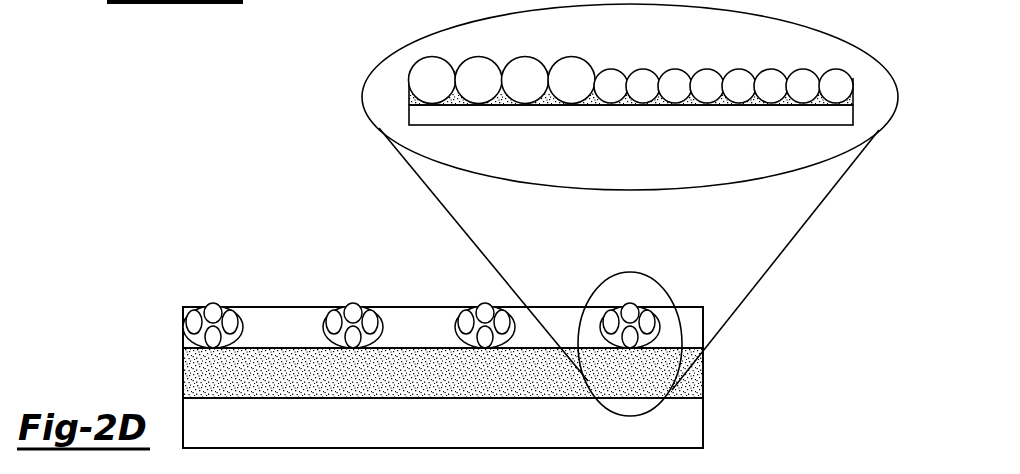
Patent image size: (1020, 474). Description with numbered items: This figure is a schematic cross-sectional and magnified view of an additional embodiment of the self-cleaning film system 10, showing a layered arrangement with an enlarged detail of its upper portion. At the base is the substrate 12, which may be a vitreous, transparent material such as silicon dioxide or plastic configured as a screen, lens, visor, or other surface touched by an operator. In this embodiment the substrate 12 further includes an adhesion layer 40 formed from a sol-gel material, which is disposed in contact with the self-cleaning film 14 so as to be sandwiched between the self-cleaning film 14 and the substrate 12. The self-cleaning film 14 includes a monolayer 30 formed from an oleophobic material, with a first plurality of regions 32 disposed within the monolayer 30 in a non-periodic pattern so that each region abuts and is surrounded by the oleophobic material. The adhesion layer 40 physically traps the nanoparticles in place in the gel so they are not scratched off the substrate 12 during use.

The self-cleaning film system 10 is at (173, 248).
The substrate 12 is at (703, 423).
The self-cleaning film 14 is at (403, 300).
The monolayer 30 is at (748, 53).
The first plurality of regions 32 is at (343, 290).
The adhesion layer 40 is at (703, 370).